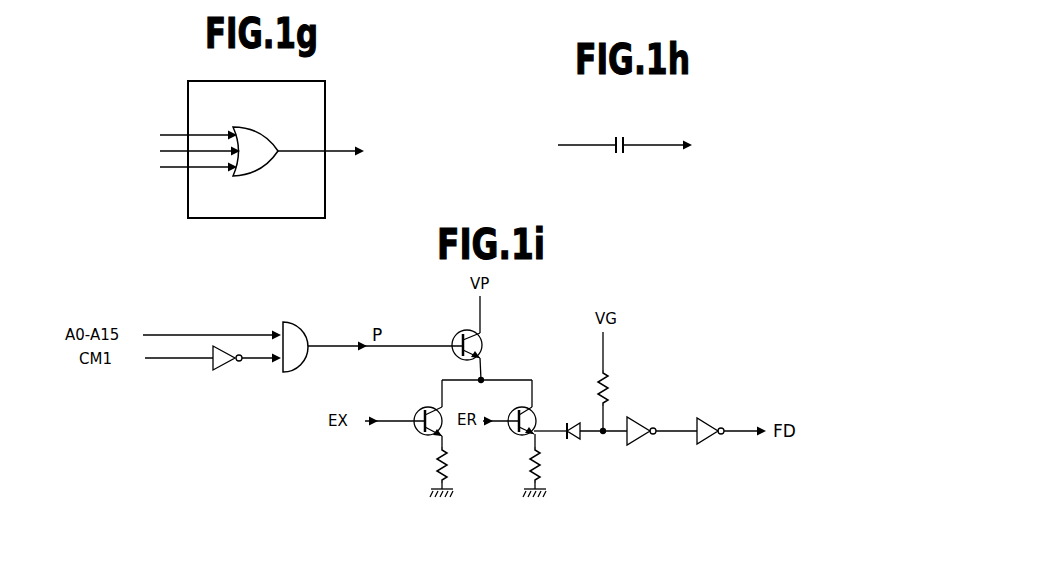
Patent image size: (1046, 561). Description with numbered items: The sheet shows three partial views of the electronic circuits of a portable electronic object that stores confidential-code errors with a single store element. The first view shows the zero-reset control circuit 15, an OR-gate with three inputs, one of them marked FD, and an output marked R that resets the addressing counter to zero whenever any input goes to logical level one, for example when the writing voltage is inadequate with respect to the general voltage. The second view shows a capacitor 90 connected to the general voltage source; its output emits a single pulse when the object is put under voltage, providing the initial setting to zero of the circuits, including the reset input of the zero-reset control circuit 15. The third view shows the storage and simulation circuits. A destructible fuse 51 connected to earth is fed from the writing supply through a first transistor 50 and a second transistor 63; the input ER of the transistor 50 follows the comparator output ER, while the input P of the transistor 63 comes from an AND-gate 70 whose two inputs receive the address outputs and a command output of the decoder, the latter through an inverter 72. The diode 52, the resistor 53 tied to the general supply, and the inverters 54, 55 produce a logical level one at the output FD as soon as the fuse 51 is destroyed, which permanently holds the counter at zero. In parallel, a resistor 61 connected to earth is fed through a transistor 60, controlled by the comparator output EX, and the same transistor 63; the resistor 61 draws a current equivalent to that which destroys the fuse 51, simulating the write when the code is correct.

In FIG. 1G, the zero-reset control circuit 15 is at (252, 212).
In FIG. 1H, the capacitor 90 is at (617, 155).
In FIG. 1I, the AND-gate 70 is at (305, 331).
In FIG. 1I, the inverter 72 is at (223, 371).
In FIG. 1I, the second transistor 63 is at (486, 341).
In FIG. 1I, the transistor 60 is at (411, 431).
In FIG. 1I, the resistor 61 is at (455, 470).
In FIG. 1I, the first transistor 50 is at (535, 418).
In FIG. 1I, the destructible fuse 51 is at (545, 470).
In FIG. 1I, the diode 52 is at (575, 437).
In FIG. 1I, the resistor 53 is at (612, 385).
In FIG. 1I, the inverter 54 is at (652, 417).
In FIG. 1I, the inverter 55 is at (708, 433).